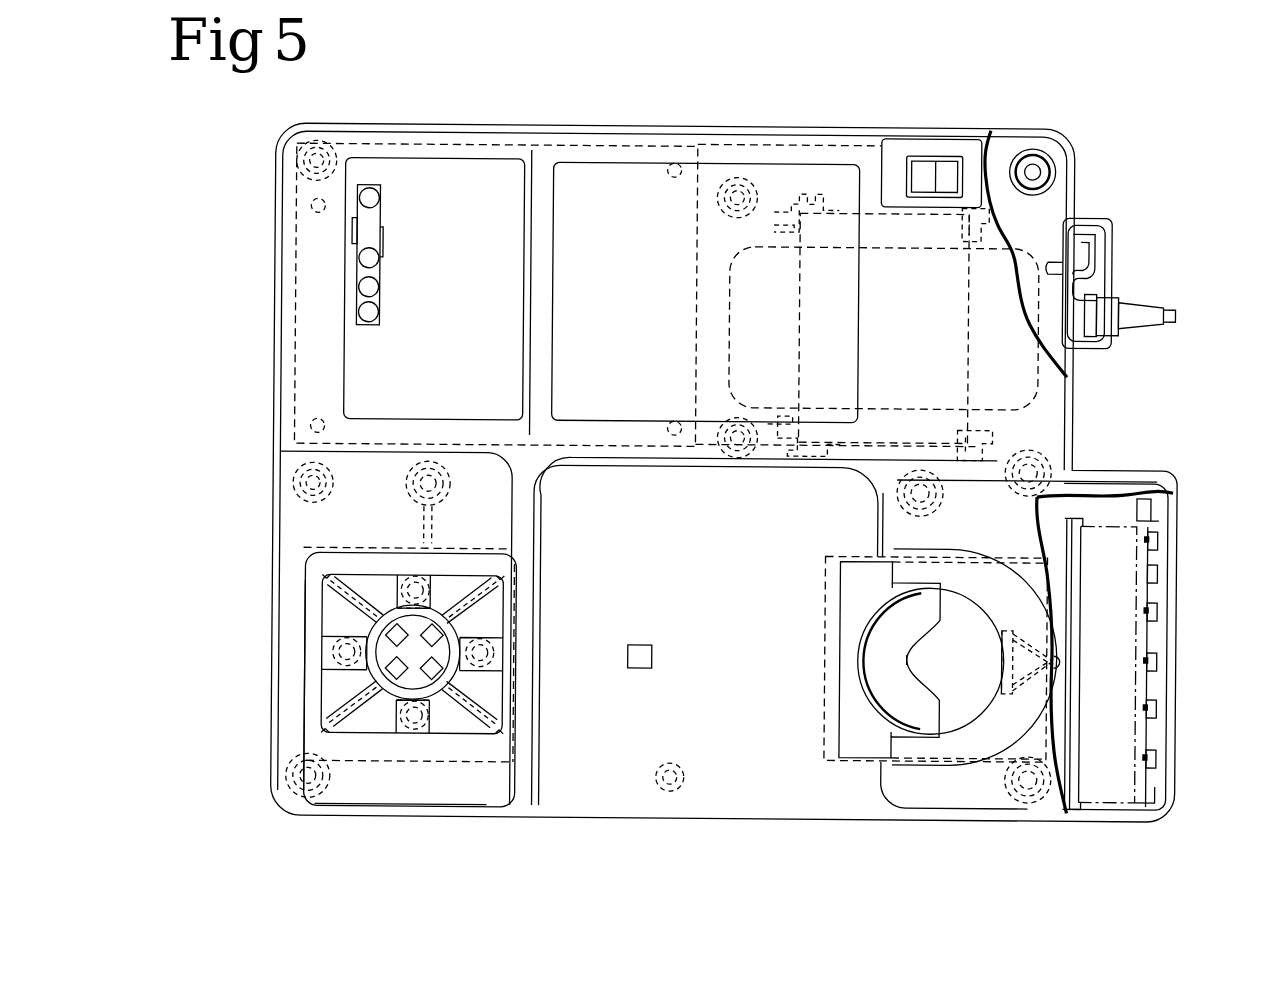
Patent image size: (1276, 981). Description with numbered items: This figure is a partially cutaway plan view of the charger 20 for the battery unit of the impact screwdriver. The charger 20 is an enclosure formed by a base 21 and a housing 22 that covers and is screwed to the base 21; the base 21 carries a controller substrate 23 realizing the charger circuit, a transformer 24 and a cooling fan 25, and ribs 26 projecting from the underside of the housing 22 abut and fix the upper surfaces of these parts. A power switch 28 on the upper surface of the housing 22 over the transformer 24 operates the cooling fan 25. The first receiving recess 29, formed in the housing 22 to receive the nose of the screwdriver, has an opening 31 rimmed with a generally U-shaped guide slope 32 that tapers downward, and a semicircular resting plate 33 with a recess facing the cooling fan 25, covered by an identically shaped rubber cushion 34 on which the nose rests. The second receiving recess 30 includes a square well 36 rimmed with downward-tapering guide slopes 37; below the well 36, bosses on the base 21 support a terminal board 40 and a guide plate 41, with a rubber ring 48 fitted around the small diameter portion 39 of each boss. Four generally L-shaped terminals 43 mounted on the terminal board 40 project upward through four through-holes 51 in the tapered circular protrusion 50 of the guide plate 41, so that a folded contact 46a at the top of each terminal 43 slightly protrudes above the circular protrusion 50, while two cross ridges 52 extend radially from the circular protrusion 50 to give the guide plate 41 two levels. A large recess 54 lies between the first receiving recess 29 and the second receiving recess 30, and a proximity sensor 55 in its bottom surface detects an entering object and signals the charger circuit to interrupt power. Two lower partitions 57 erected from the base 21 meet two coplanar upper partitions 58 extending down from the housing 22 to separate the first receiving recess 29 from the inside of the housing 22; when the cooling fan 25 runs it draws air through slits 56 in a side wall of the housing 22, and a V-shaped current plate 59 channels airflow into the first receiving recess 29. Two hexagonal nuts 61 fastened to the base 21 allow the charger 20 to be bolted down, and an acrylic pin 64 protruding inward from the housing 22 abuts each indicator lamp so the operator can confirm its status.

The charger 20 is at (851, 117).
The base 21 is at (1070, 176).
The housing 22 is at (665, 137).
The controller substrate 23 is at (518, 140).
The transformer 24 is at (838, 236).
The cooling fan 25 is at (1120, 780).
The ribs 26 is at (787, 204).
The power switch 28 is at (931, 152).
The first receiving recess 29 is at (978, 735).
The second receiving recess 30 is at (386, 731).
The opening 31 is at (955, 730).
The guide slope 32 is at (1002, 735).
The resting plate 33 is at (883, 685).
The rubber cushion 34 is at (900, 690).
The square well 36 is at (456, 747).
The guide slopes 37 is at (316, 689).
The small diameter portion 39 is at (437, 574).
The terminal board 40 is at (314, 567).
The guide plate 41 is at (334, 604).
The terminals 43 is at (509, 599).
The folded contact 46a is at (334, 574).
The rubber ring 48 is at (414, 579).
The circular protrusion 50 is at (399, 639).
The through-holes 51 is at (402, 671).
The cross ridges 52 is at (402, 699).
The large recess 54 is at (722, 699).
The proximity sensor 55 is at (656, 640).
The slits 56 is at (1170, 533).
The lower partitions 57 is at (1052, 490).
The upper partitions 58 is at (1062, 818).
The current plate 59 is at (1063, 633).
The hexagonal nuts 61 is at (432, 462).
The acrylic pin 64 is at (370, 288).